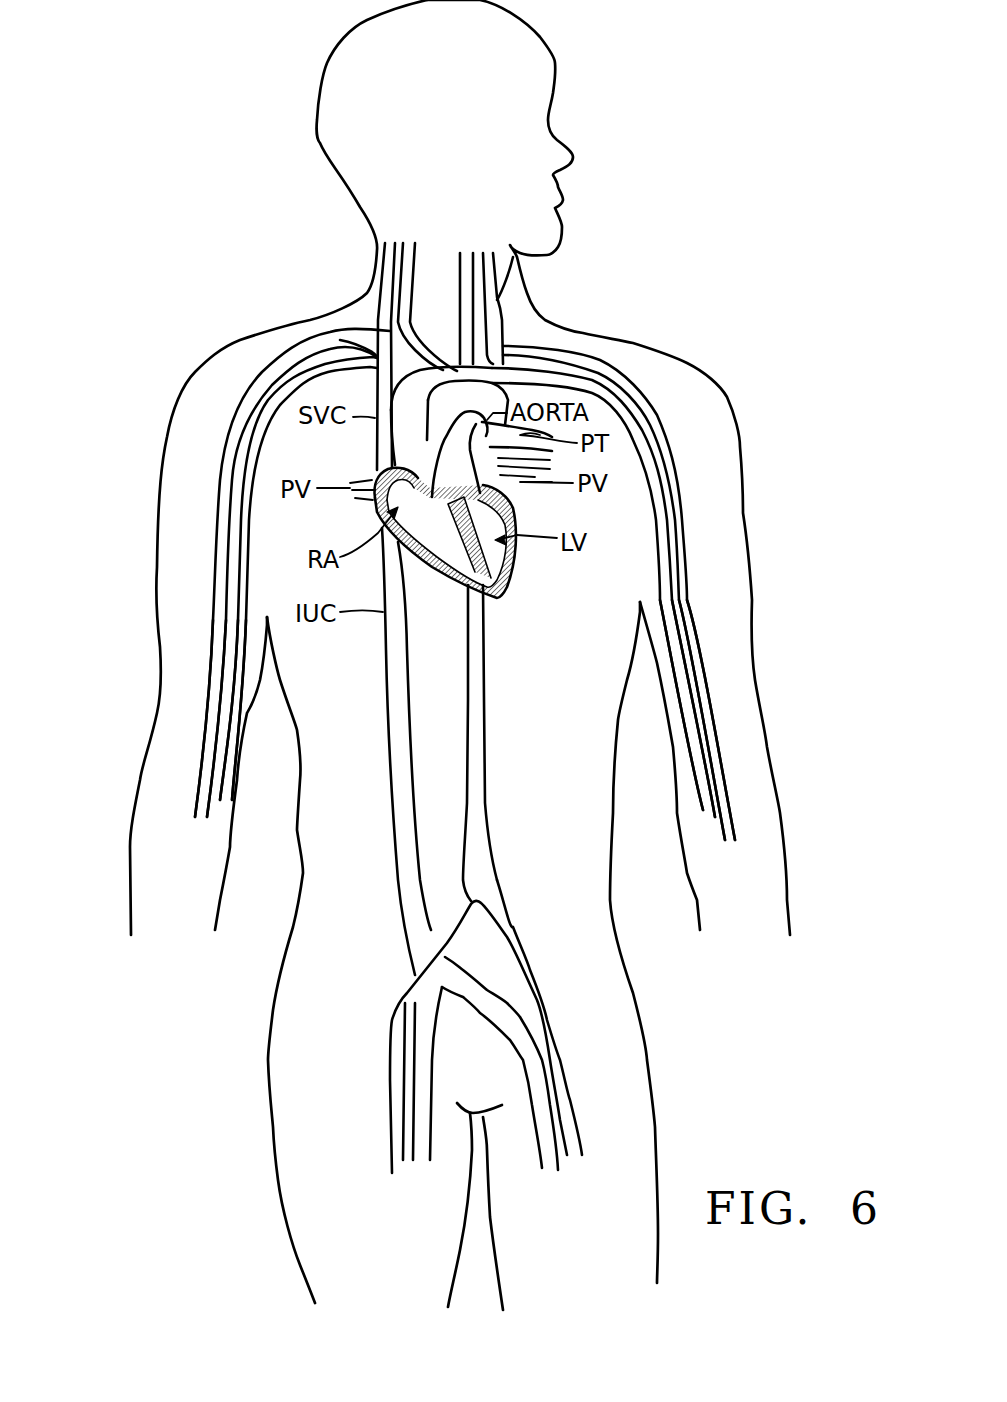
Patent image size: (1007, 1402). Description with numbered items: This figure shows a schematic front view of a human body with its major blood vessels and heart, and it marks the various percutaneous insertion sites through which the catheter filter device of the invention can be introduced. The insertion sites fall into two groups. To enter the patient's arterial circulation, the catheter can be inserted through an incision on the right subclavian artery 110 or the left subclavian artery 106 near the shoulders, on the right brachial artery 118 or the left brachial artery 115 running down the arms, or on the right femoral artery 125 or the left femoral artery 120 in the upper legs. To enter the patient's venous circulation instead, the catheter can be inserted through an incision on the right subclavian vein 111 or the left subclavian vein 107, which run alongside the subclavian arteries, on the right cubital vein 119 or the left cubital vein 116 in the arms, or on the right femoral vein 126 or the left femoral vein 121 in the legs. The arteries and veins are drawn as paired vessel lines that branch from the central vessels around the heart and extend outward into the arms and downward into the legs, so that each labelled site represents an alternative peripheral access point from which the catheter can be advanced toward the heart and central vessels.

The left subclavian artery 106 is at (562, 375).
The left subclavian vein 107 is at (631, 402).
The right subclavian artery 110 is at (310, 350).
The right subclavian vein 111 is at (287, 397).
The left brachial artery 115 is at (710, 737).
The left cubital vein 116 is at (703, 788).
The right brachial artery 118 is at (208, 733).
The right cubital vein 119 is at (228, 768).
The left femoral artery 120 is at (553, 1063).
The left femoral vein 121 is at (536, 1127).
The right femoral artery 125 is at (398, 1130).
The right femoral vein 126 is at (413, 1060).